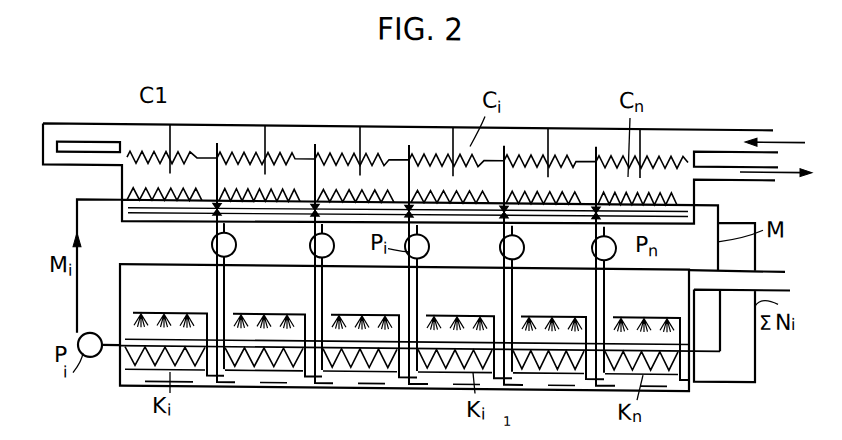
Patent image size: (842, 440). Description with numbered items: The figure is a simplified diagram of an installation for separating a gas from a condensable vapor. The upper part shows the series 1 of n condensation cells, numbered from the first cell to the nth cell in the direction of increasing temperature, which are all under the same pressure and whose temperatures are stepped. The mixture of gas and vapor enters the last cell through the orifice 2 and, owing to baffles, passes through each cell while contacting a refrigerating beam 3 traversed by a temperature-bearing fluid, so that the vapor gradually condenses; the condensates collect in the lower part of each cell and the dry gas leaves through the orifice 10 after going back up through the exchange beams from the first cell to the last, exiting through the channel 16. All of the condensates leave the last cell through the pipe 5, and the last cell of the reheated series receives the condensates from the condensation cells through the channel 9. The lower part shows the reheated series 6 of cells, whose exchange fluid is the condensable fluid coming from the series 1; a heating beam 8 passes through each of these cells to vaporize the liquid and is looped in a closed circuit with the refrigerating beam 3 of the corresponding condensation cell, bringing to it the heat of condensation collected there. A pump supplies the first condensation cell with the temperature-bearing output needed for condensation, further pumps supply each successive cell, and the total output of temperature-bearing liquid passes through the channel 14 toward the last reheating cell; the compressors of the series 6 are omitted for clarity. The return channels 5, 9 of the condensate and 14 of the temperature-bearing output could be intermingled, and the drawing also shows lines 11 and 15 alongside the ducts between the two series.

The series of condensation cells 1 is at (433, 121).
The orifice 2 is at (733, 133).
The refrigerating beam 3 is at (343, 190).
The pipe 5 is at (705, 192).
The reheated series with compressors 6 is at (457, 384).
The heating beam 8 is at (362, 344).
The channel 9 is at (713, 375).
The orifice 10 is at (77, 131).
The connecting duct 11 is at (762, 273).
The channel 14 is at (720, 328).
The supply line 15 is at (77, 294).
The channel 16 is at (755, 173).